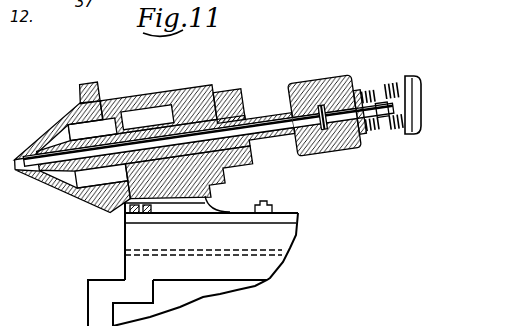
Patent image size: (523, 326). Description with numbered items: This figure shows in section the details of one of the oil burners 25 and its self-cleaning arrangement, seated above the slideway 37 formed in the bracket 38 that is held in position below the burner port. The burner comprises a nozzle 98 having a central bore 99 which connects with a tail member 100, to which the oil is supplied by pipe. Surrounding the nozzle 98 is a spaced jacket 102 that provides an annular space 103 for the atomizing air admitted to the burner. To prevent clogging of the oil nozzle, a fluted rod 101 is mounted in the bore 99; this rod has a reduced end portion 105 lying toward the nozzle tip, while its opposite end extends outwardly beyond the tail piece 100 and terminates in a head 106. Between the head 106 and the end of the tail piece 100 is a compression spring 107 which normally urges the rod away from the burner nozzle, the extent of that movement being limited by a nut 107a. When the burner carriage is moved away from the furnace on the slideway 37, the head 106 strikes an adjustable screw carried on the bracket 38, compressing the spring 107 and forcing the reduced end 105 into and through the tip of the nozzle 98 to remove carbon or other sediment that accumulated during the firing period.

The burner 25 is at (144, 80).
The slideway 37 is at (267, 240).
The bracket 38 is at (105, 302).
The nozzle 98 is at (230, 93).
The central bore 99 is at (248, 149).
The tail member 100 is at (318, 80).
The fluted rod 101 is at (276, 107).
The jacket 102 is at (90, 86).
The annular space 103 is at (62, 119).
The reduced end portion 105 is at (62, 160).
The head 106 is at (408, 76).
The compression spring 107 is at (393, 112).
The nut 107a is at (324, 123).